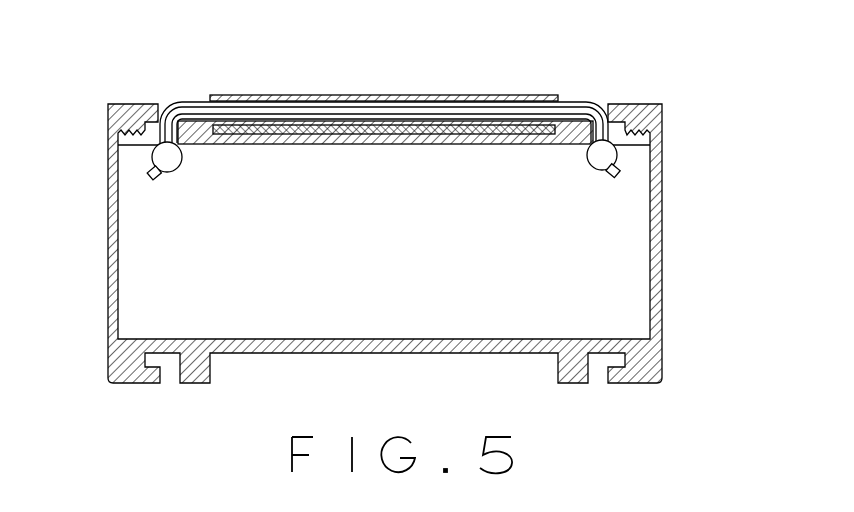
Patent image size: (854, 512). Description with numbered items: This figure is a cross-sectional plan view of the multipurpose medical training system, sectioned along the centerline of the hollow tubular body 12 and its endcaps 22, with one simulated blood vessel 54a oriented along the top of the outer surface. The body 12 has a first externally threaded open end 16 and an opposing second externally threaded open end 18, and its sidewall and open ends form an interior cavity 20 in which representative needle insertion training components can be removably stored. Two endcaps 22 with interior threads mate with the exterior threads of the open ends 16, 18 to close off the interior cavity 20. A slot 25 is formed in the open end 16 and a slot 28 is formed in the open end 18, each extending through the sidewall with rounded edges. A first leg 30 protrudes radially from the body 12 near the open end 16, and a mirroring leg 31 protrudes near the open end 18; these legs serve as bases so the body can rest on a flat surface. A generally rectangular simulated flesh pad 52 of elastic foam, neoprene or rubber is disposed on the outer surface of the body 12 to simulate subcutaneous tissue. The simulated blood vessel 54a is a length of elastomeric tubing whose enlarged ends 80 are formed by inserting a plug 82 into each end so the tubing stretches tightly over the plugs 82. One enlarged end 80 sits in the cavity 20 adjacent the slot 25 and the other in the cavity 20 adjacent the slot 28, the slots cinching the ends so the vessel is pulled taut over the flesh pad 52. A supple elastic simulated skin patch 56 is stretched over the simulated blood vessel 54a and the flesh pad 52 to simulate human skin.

The hollow tubular body 12 is at (289, 146).
The first externally threaded open end 16 is at (593, 275).
The second externally threaded open end 18 is at (177, 277).
The interior cavity 20 is at (412, 283).
The endcap 22 is at (108, 132).
The slot 25 is at (634, 146).
The slot 28 is at (132, 146).
The first leg 30 is at (573, 383).
The leg 31 is at (196, 383).
The simulated flesh pad 52 is at (318, 130).
The simulated blood vessel 54a is at (405, 113).
The simulated skin patch 56 is at (437, 94).
The enlarged end 80 is at (168, 187).
The plug 82 is at (173, 163).